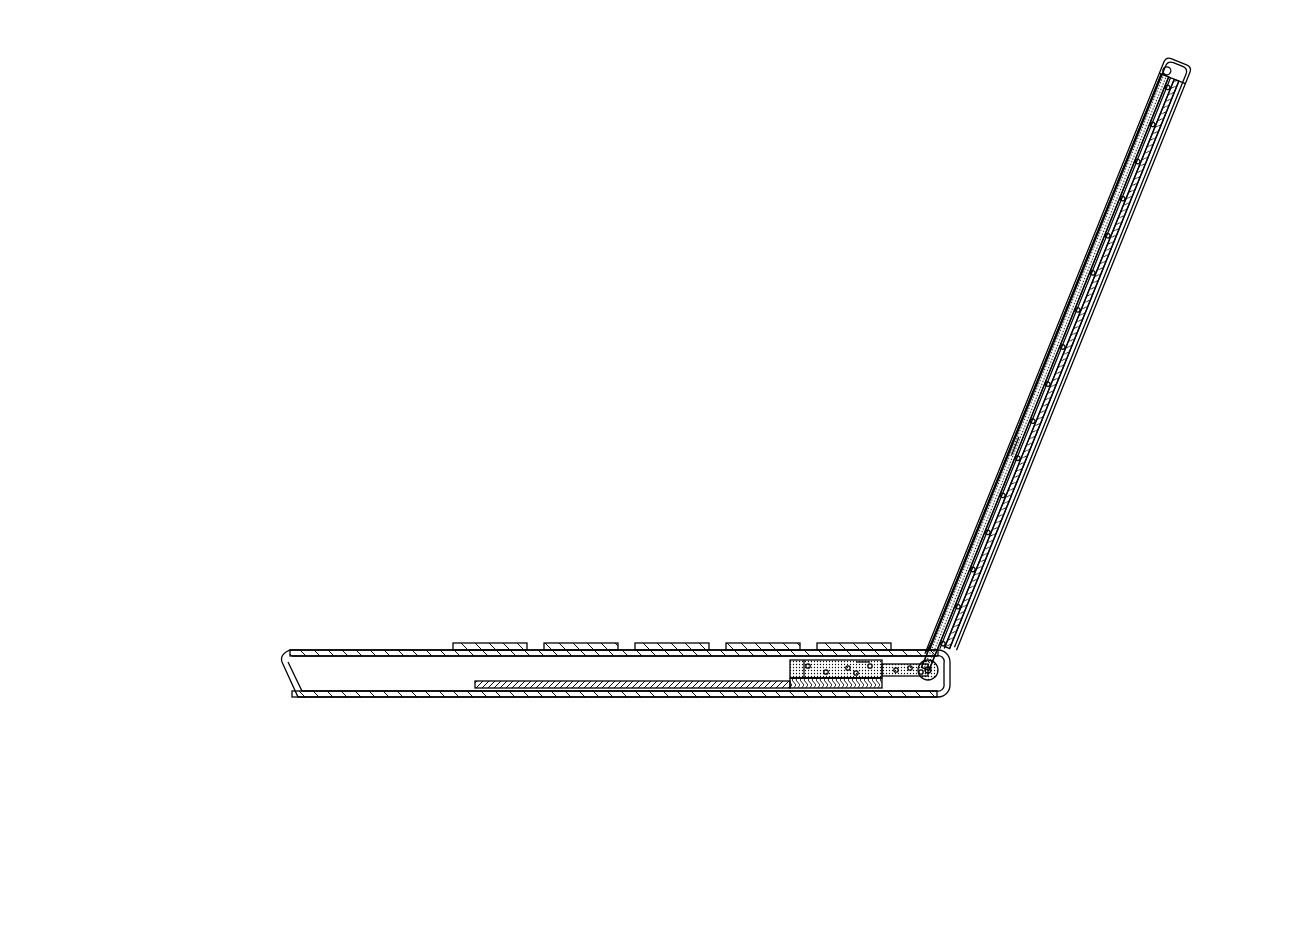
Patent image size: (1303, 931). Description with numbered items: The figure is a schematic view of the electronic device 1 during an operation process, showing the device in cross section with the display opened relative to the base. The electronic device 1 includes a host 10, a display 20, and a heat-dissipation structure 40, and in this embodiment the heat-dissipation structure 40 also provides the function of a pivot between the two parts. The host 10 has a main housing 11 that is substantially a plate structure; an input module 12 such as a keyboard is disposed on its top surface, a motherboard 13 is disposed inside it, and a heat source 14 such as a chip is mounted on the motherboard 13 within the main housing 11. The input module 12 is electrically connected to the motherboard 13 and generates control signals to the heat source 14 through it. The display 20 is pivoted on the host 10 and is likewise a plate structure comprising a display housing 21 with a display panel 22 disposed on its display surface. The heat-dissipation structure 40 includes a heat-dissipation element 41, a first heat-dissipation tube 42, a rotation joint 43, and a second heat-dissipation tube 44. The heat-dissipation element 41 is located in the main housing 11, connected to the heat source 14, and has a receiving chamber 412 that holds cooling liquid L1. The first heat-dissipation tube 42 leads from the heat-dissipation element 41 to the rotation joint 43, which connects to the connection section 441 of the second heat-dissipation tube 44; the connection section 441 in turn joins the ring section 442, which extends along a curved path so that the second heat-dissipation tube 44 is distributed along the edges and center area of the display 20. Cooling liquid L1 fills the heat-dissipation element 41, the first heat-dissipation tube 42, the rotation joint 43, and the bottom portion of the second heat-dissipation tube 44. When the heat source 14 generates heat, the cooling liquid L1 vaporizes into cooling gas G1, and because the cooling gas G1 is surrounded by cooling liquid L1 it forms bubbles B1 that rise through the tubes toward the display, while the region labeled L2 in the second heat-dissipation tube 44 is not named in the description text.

The electronic device 1 is at (212, 81).
The host 10 is at (589, 660).
The main housing 11 is at (299, 651).
The input module 12 is at (481, 646).
The motherboard 13 is at (519, 689).
The heat source 14 is at (812, 689).
The display 20 is at (1040, 70).
The display housing 21 is at (1058, 361).
The display panel 22 is at (1173, 74).
The heat-dissipation structure 40 is at (310, 84).
The heat-dissipation element 41 is at (786, 667).
The receiving chamber 412 is at (838, 679).
The first heat-dissipation tube 42 is at (897, 677).
The rotation joint 43 is at (937, 681).
The second heat-dissipation tube 44 is at (1045, 372).
The connection section 441 is at (1042, 370).
The ring section 442 is at (1049, 373).
The bubbles B1 is at (808, 663).
The cooling liquid L1 is at (862, 662).
The second liquid layer L2 is at (1014, 446).
The cooling gas G1 is at (1062, 363).